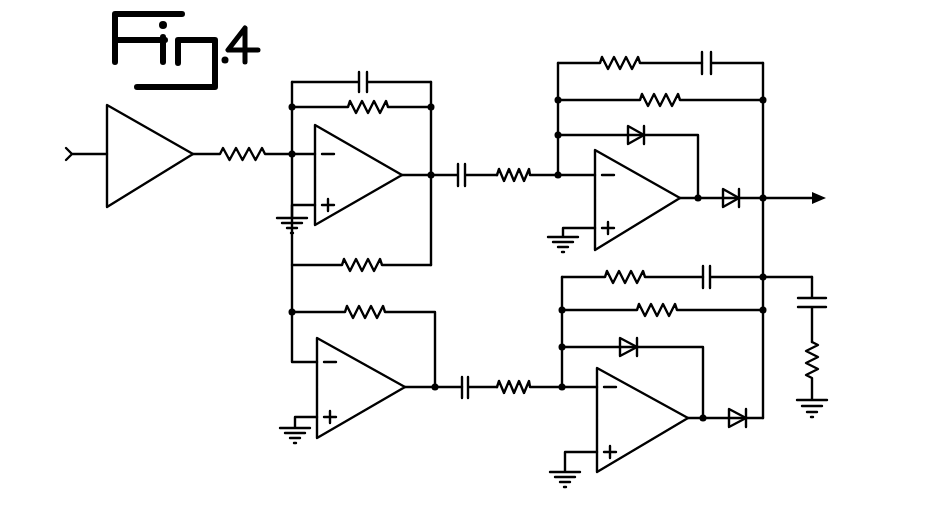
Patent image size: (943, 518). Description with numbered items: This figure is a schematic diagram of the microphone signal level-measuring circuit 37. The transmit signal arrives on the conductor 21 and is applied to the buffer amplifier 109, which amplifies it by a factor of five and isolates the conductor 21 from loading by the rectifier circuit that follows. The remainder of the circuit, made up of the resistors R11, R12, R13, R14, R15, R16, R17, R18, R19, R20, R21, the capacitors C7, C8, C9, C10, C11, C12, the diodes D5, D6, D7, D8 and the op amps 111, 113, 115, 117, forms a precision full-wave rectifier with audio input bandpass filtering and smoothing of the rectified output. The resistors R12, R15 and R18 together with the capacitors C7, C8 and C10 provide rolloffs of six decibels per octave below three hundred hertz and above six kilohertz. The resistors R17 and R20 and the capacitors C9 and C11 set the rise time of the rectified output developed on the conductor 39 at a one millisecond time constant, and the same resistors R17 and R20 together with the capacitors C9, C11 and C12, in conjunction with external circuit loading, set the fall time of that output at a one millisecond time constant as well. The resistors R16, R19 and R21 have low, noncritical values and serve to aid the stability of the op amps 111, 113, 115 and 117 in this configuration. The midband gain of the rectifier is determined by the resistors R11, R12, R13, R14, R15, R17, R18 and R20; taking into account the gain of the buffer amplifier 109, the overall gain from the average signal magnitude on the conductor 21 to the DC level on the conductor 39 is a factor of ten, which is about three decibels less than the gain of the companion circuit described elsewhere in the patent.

The conductor 21 is at (88, 154).
The microphone signal level-measuring circuit 37 is at (264, 98).
The conductor 39 is at (791, 196).
The buffer amplifier 109 is at (150, 127).
The op amp 111 is at (367, 193).
The op amp 113 is at (376, 408).
The op amp 115 is at (650, 212).
The op amp 117 is at (649, 444).
The resistor R11 is at (242, 141).
The resistor R12 is at (361, 120).
The resistor R13 is at (361, 252).
The resistor R14 is at (363, 335).
The resistor R15 is at (546, 161).
The resistor R16 is at (630, 51).
The resistor R17 is at (660, 88).
The resistor R18 is at (547, 377).
The resistor R19 is at (632, 266).
The resistor R20 is at (662, 300).
The resistor R21 is at (834, 379).
The capacitor C7 is at (361, 67).
The capacitor C8 is at (464, 163).
The capacitor C9 is at (729, 50).
The capacitor C10 is at (473, 375).
The capacitor C11 is at (749, 265).
The capacitor C12 is at (835, 309).
The diode D5 is at (628, 162).
The diode D6 is at (740, 211).
The diode D7 is at (632, 378).
The diode D8 is at (745, 433).